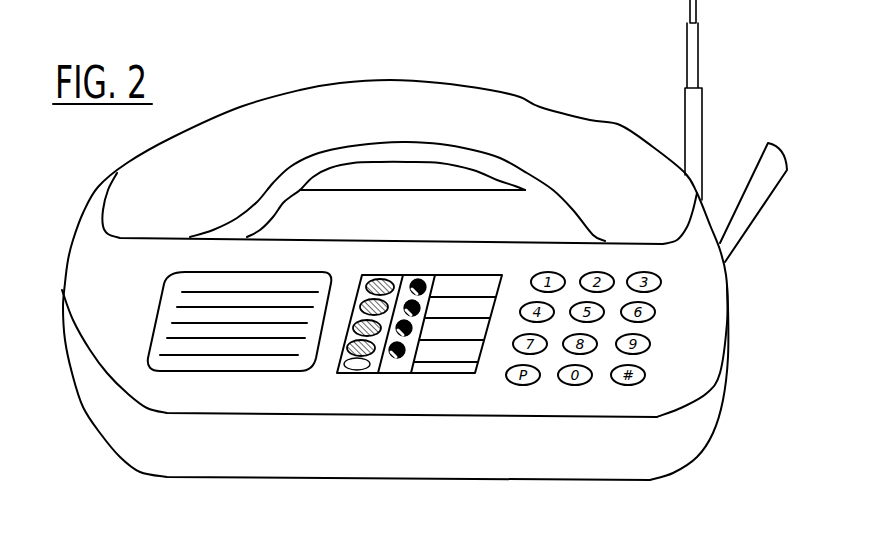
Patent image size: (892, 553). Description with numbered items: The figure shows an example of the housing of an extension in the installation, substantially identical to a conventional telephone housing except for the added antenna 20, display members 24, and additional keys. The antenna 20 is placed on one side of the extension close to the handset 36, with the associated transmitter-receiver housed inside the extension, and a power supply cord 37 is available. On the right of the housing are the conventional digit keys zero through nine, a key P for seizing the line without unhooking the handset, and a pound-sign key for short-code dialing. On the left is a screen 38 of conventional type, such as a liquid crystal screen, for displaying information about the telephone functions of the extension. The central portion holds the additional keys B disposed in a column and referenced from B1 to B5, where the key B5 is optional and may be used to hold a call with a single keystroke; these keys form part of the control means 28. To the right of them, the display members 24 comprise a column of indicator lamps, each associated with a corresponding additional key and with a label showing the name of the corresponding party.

The antenna 20 is at (696, 14).
The display members 24 is at (413, 281).
The control means 28 is at (415, 327).
The handset 36 is at (532, 112).
The power supply cord 37 is at (742, 200).
The screen 38 is at (240, 370).
The additional key B1 is at (377, 282).
The additional key B5 is at (349, 384).